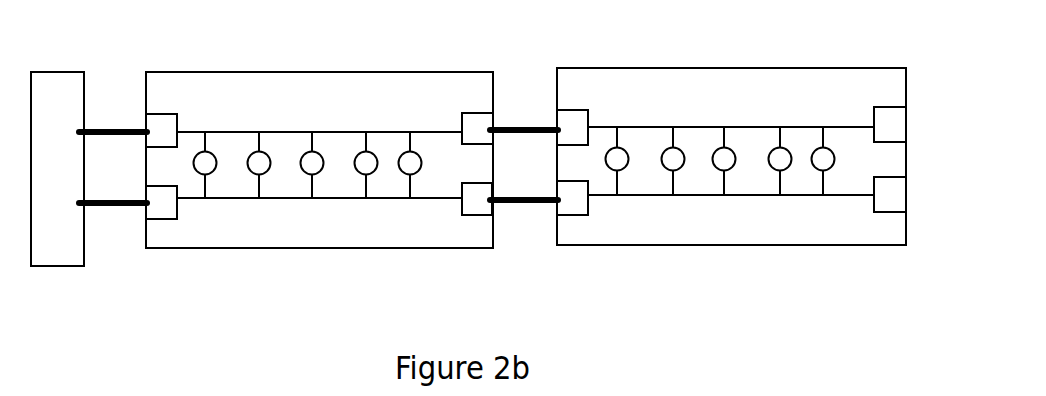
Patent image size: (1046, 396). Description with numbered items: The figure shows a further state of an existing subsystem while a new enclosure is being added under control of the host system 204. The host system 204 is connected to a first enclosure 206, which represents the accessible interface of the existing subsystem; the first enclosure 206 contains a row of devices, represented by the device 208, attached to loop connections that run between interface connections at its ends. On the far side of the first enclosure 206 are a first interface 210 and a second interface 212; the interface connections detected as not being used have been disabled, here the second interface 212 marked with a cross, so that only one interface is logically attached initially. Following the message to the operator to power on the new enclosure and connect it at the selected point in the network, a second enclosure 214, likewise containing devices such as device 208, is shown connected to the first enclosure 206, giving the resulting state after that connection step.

The host system 204 is at (47, 71).
The first enclosure 206 is at (342, 160).
The device 208 is at (197, 131).
The first interface 210 is at (462, 112).
The second interface 212 is at (463, 213).
The second enclosure 214 is at (558, 68).